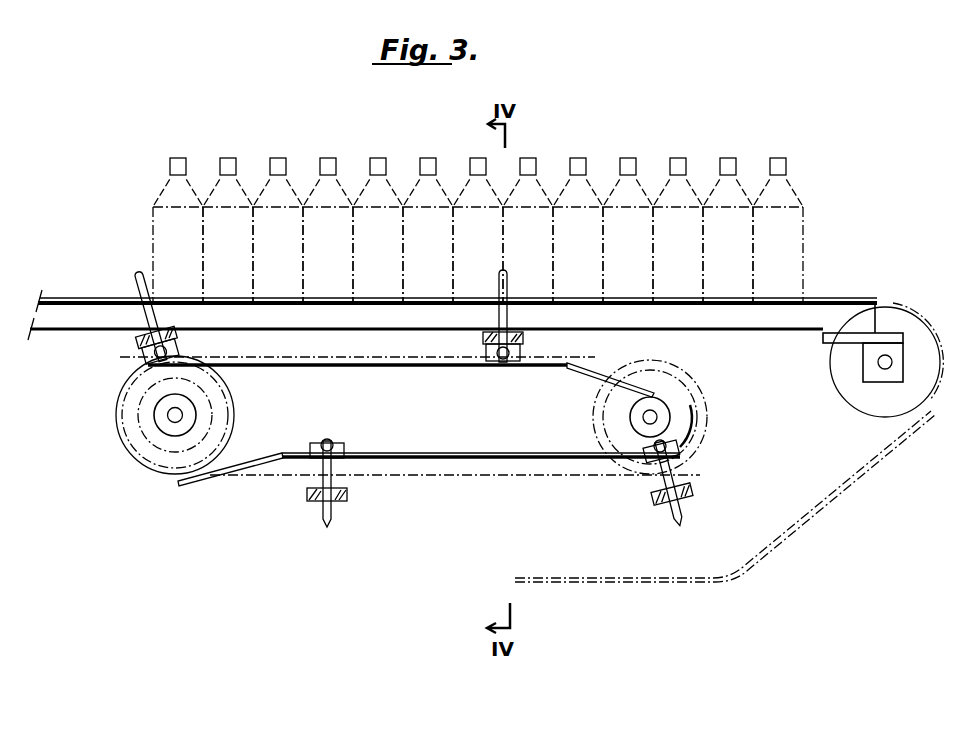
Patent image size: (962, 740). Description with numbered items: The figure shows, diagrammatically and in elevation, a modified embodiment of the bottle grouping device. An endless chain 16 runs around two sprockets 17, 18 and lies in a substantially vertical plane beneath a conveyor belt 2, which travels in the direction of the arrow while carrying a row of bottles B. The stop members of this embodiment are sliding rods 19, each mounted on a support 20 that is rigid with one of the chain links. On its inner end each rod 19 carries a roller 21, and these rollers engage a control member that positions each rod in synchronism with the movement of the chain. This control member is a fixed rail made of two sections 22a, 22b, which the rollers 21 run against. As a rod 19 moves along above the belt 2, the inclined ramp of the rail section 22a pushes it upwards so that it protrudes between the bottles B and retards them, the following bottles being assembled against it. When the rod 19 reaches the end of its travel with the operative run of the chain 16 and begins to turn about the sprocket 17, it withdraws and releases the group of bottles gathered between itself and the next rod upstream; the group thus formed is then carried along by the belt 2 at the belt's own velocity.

The conveyor belt 2 is at (84, 300).
The bottles B is at (252, 208).
The endless chain 16 is at (237, 478).
The sprocket 17 is at (157, 463).
The sprocket 18 is at (704, 456).
The sliding rod 19 is at (143, 314).
The support 20 is at (172, 338).
The roller 21 is at (158, 358).
The rail section 22a is at (382, 365).
The rail section 22b is at (450, 463).